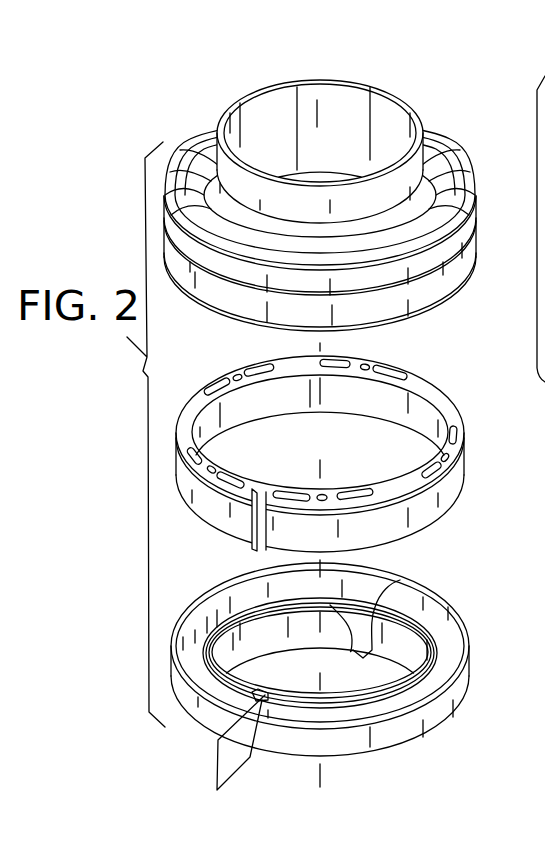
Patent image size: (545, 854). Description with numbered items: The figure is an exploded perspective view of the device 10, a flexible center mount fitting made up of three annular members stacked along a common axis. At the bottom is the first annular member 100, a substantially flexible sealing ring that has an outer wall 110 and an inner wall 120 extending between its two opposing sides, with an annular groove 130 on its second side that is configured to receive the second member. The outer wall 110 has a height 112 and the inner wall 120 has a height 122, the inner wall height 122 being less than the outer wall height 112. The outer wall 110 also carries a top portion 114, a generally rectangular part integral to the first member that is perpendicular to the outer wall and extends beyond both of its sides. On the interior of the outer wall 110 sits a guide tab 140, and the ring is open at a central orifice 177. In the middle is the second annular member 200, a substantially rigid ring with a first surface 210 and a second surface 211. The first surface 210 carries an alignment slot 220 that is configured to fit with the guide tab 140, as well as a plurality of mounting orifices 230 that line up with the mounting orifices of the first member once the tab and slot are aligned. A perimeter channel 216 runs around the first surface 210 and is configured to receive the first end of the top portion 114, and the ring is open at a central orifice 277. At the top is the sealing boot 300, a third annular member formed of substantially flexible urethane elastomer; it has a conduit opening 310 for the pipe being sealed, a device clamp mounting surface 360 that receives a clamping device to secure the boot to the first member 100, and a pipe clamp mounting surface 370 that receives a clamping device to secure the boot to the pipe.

The device 10 is at (150, 127).
The first annular member 100 is at (428, 748).
The outer wall 110 is at (463, 606).
The outer wall height 112 is at (212, 778).
The top portion 114 is at (172, 663).
The inner wall 120 is at (443, 647).
The inner wall height 122 is at (400, 580).
The annular groove 130 is at (183, 631).
The guide tab 140 is at (264, 696).
The central orifice 177 is at (390, 684).
The second annular member 200 is at (452, 522).
The first surface 210 is at (444, 492).
The second surface 211 is at (421, 413).
The perimeter channel 216 is at (187, 476).
The alignment slot 220 is at (248, 548).
The mounting orifices 230 is at (240, 375).
The central orifice 277 is at (333, 456).
The sealing boot 300 is at (442, 306).
The conduit opening 310 is at (276, 110).
The device clamp mounting surface 360 is at (468, 282).
The pipe clamp mounting surface 370 is at (418, 127).